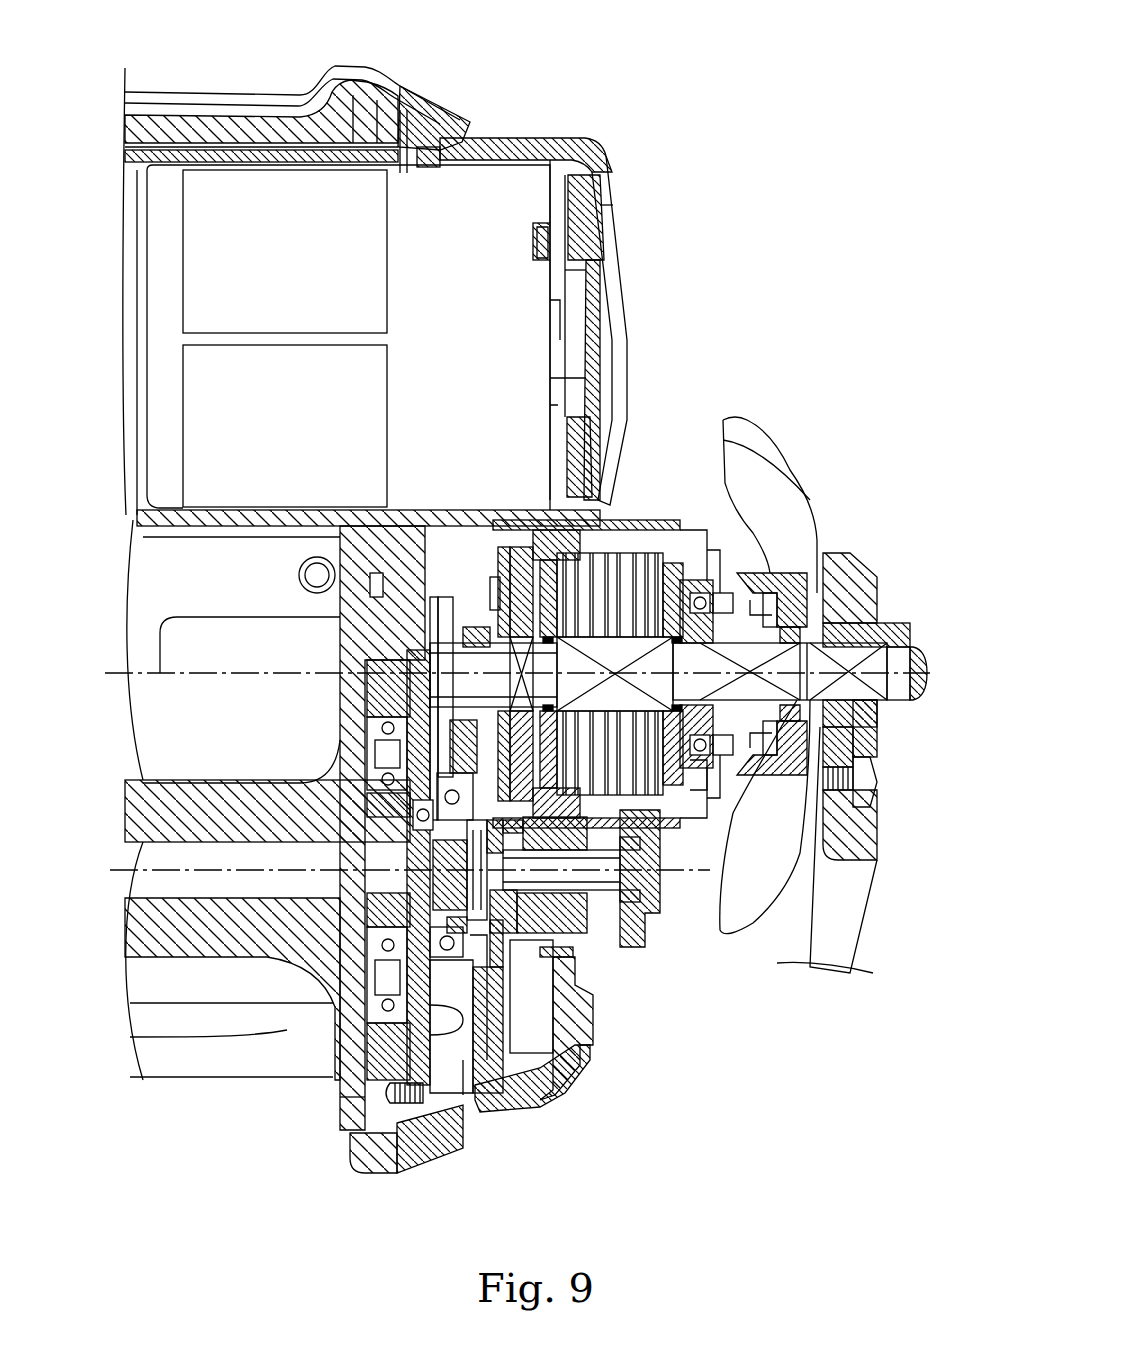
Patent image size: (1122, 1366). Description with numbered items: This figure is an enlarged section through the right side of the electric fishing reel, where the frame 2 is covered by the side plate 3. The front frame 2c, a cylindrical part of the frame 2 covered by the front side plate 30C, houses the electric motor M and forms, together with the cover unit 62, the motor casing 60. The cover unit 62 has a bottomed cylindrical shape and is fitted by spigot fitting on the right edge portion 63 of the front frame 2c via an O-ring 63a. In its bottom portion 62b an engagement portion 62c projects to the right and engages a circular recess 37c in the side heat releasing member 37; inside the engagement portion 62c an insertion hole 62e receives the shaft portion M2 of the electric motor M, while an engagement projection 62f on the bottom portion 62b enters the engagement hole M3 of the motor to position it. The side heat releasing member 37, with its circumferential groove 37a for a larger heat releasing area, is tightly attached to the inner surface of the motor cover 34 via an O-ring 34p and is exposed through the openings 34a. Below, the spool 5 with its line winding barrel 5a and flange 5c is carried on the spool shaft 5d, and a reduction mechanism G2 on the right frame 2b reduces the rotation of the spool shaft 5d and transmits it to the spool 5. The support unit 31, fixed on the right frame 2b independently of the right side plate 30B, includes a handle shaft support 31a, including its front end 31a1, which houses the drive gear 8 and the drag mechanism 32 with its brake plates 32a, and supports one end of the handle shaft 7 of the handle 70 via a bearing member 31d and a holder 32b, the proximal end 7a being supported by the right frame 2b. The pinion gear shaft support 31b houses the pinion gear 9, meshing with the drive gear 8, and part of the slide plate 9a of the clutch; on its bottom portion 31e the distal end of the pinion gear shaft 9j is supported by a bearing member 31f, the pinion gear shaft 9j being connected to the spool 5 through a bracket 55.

The frame 2 is at (418, 635).
The right frame 2b is at (378, 1160).
The front frame 2c is at (239, 152).
The side plate 3 is at (406, 583).
The spool 5 is at (265, 835).
The line winding barrel 5a is at (183, 937).
The flange 5c is at (342, 1097).
The spool shaft 5d is at (170, 842).
The handle shaft 7 is at (868, 660).
The proximal end 7a is at (473, 580).
The drive gear 8 is at (657, 870).
The pinion gear 9 is at (553, 981).
The slide plate 9a is at (524, 1103).
The pinion gear shaft 9j is at (594, 948).
The right side plate 30B is at (582, 1096).
The front side plate 30C is at (187, 92).
The support unit 31 is at (733, 713).
The handle shaft support 31a is at (741, 577).
The hub front end 31a1 is at (675, 522).
The pinion gear shaft support 31b is at (642, 913).
The bearing member 31d is at (748, 530).
The bottom portion 31e is at (642, 896).
The bearing member 31f is at (643, 940).
The drag mechanism 32 is at (630, 589).
The brake plates 32a is at (598, 477).
The holder 32b is at (697, 772).
The motor cover 34 is at (619, 287).
The openings 34a is at (609, 204).
The O-ring 34p is at (598, 160).
The side heat releasing member 37 is at (644, 292).
The circumferential groove 37a is at (568, 172).
The circular recess 37c is at (627, 303).
The bracket 55 is at (443, 1152).
The motor casing 60 is at (418, 270).
The cover unit 62 is at (576, 295).
The bottom portion 62b is at (614, 214).
The engagement portion 62c is at (616, 273).
The insertion hole 62e is at (588, 374).
The engagement projection 62f is at (536, 233).
The right edge portion 63 is at (419, 145).
The O-ring 63a is at (437, 138).
The handle 70 is at (857, 893).
The reduction mechanism G2 is at (460, 1076).
The electric motor M is at (355, 303).
The shaft portion M2 is at (560, 327).
The engagement hole M3 is at (531, 257).